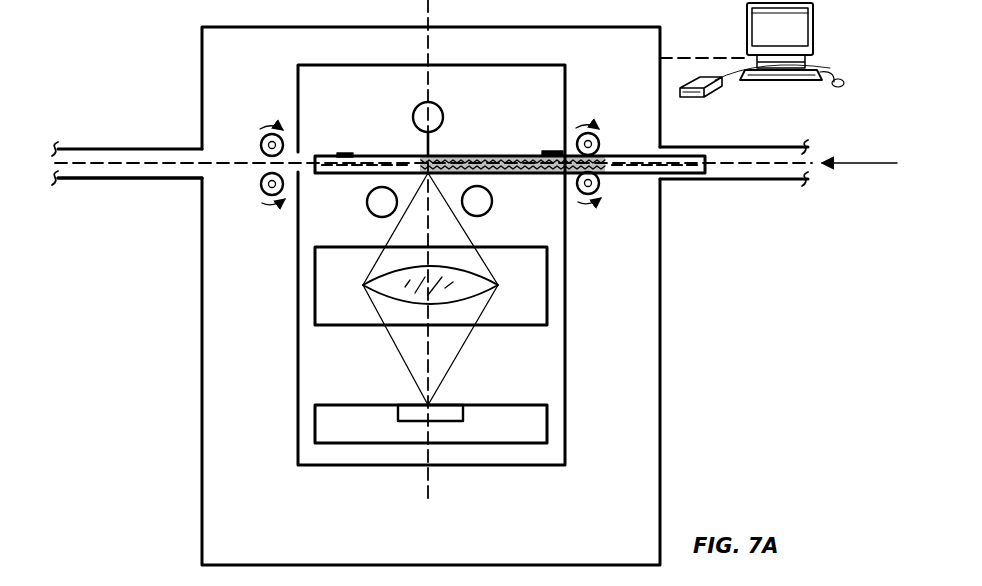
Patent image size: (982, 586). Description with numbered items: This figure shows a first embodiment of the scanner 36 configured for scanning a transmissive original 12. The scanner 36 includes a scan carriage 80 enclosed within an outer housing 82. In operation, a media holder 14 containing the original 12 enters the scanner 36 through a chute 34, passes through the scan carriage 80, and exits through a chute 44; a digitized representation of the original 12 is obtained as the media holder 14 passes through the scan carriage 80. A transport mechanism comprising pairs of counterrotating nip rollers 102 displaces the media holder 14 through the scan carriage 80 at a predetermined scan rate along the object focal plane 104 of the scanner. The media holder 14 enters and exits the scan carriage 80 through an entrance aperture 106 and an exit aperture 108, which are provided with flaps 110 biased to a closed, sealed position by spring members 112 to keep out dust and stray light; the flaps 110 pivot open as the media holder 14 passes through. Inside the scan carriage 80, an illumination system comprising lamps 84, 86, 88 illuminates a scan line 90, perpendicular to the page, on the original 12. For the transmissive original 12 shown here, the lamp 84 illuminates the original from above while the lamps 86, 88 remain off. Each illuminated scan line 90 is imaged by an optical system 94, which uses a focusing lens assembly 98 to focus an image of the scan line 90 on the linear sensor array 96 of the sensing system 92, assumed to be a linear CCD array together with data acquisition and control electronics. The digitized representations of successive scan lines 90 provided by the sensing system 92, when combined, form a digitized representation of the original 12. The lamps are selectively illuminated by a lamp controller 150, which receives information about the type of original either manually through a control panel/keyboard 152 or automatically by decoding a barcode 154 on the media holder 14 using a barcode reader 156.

The scanner 36 is at (190, 46).
The object focal plane 104 is at (195, 163).
The chute 44 is at (152, 175).
The outer housing 82 is at (200, 297).
The nip rollers 102 is at (262, 183).
The spring members 112 is at (296, 150).
The flaps 110 is at (298, 163).
The barcode 154 is at (346, 153).
The scan line 90 is at (420, 157).
The lamp 84 is at (440, 108).
The original 12 is at (444, 153).
The media holder 14 is at (680, 168).
The exit aperture 108 is at (300, 172).
The entrance aperture 106 is at (563, 178).
The lamp 86 is at (376, 212).
The lamp 88 is at (486, 209).
The optical system 94 is at (316, 293).
The focusing lens assembly 98 is at (463, 293).
The scan carriage 80 is at (566, 396).
The sensing system 92 is at (328, 425).
The linear sensor array 96 is at (421, 418).
The chute 34 is at (757, 172).
The lamp controller 150 is at (805, 65).
The control panel/keyboard 152 is at (782, 75).
The barcode reader 156 is at (706, 92).